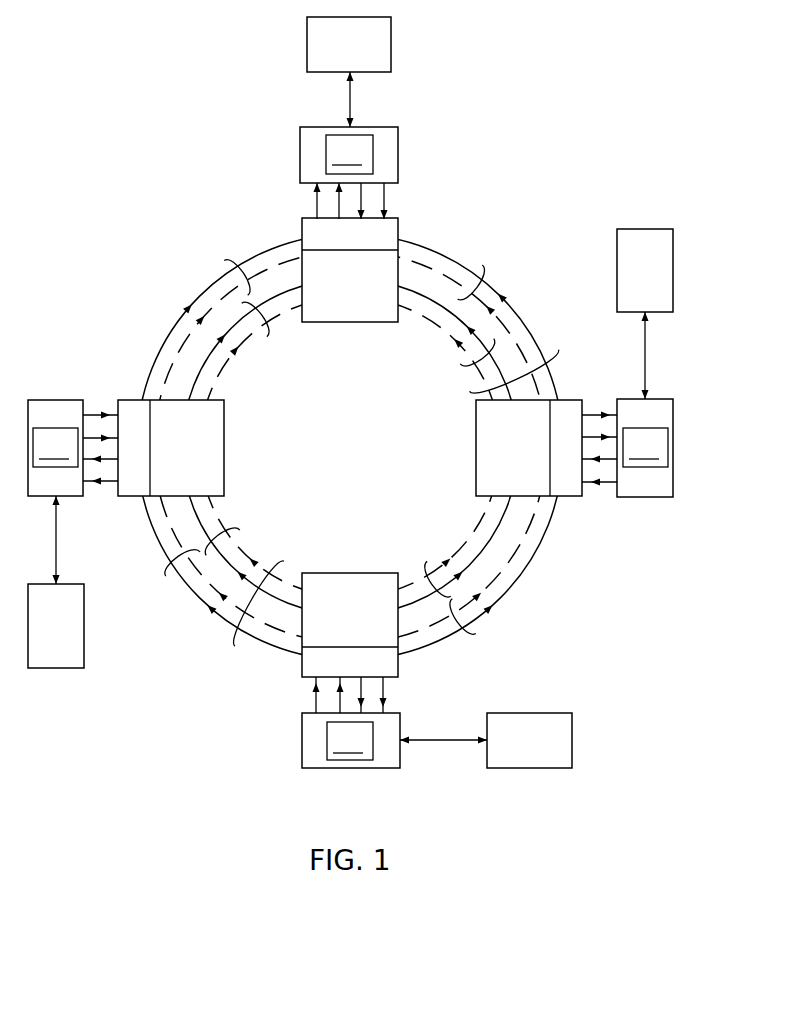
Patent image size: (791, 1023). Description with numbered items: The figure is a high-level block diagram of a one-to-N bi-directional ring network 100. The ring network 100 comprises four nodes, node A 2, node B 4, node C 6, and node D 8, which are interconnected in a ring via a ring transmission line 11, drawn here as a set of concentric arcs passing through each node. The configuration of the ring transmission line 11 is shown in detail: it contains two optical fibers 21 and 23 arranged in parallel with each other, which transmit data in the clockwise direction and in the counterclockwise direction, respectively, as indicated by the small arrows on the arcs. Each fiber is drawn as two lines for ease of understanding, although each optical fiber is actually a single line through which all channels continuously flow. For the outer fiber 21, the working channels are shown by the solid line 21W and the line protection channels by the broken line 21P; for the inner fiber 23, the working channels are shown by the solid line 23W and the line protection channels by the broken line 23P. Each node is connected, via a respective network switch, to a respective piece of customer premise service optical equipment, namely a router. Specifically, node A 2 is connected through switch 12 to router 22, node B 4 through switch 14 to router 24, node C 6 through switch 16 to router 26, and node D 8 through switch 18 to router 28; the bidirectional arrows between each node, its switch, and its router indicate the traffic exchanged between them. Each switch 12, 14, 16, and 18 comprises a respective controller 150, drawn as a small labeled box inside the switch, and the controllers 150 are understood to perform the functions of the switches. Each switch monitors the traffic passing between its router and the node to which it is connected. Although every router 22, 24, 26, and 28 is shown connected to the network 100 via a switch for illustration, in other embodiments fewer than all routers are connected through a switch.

The ring network 100 is at (316, 415).
The node A 2 is at (400, 261).
The node B 4 is at (224, 452).
The node C 6 is at (328, 573).
The node D 8 is at (476, 466).
The ring transmission line 11 is at (553, 350).
The network switch 12 is at (386, 155).
The network switch 14 is at (42, 400).
The network switch 16 is at (302, 740).
The network switch 18 is at (647, 497).
The optical fiber 21 is at (236, 274).
The working channels 21W is at (163, 340).
The line protection channels 21P is at (147, 370).
The inner ring fiber pair 23 is at (258, 333).
The inner ring working fiber 23W is at (208, 350).
The inner ring protection fiber 23P is at (215, 375).
The router 22 is at (392, 43).
The router 24 is at (84, 645).
The router 26 is at (528, 768).
The router 28 is at (647, 229).
The controller 150 is at (349, 154).